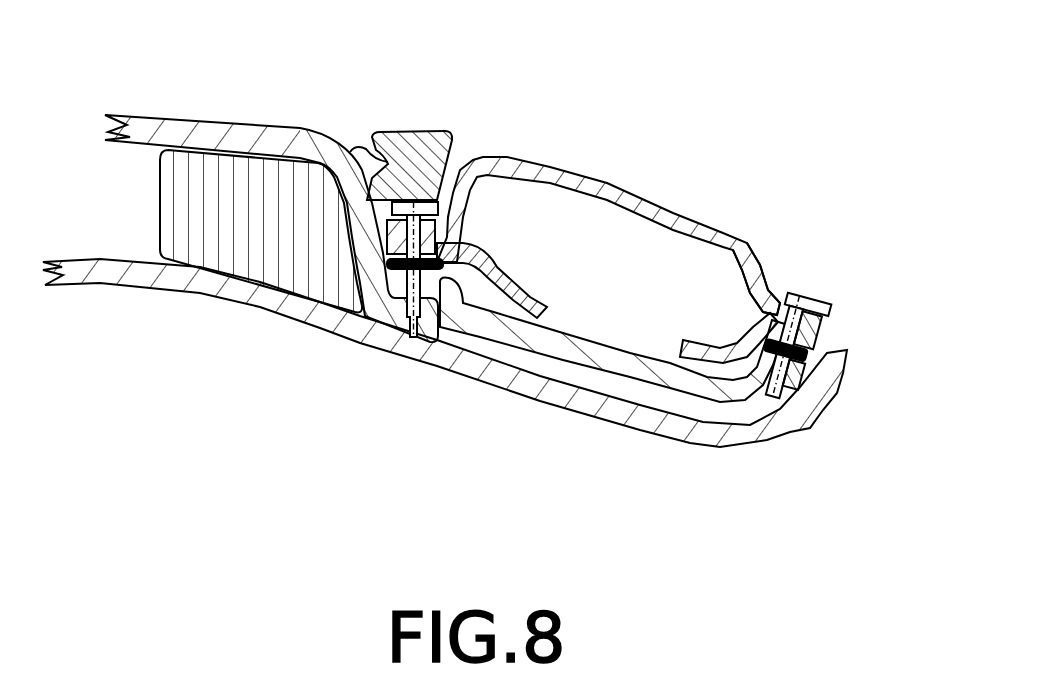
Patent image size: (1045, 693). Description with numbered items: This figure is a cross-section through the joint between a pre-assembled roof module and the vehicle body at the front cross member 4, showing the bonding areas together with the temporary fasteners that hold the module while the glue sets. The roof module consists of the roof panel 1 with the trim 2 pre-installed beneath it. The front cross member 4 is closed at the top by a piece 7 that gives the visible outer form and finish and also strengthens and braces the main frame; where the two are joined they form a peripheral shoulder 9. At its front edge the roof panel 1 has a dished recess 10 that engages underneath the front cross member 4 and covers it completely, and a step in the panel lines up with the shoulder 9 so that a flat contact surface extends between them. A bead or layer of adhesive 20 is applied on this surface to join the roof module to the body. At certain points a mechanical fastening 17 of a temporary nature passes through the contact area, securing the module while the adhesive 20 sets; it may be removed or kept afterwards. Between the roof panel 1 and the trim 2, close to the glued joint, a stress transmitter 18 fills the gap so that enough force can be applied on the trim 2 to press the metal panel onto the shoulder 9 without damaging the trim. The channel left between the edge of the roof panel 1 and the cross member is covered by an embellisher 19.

The roof panel 1 is at (165, 130).
The trim 2 is at (728, 437).
The front cross member 4 is at (512, 273).
The piece 7 is at (640, 200).
The peripheral shoulder 9 is at (778, 317).
The dished recess 10 is at (553, 343).
The mechanical fastening 17 is at (418, 203).
The stress transmitter 18 is at (268, 188).
The embellisher 19 is at (383, 137).
The adhesive 20 is at (442, 260).